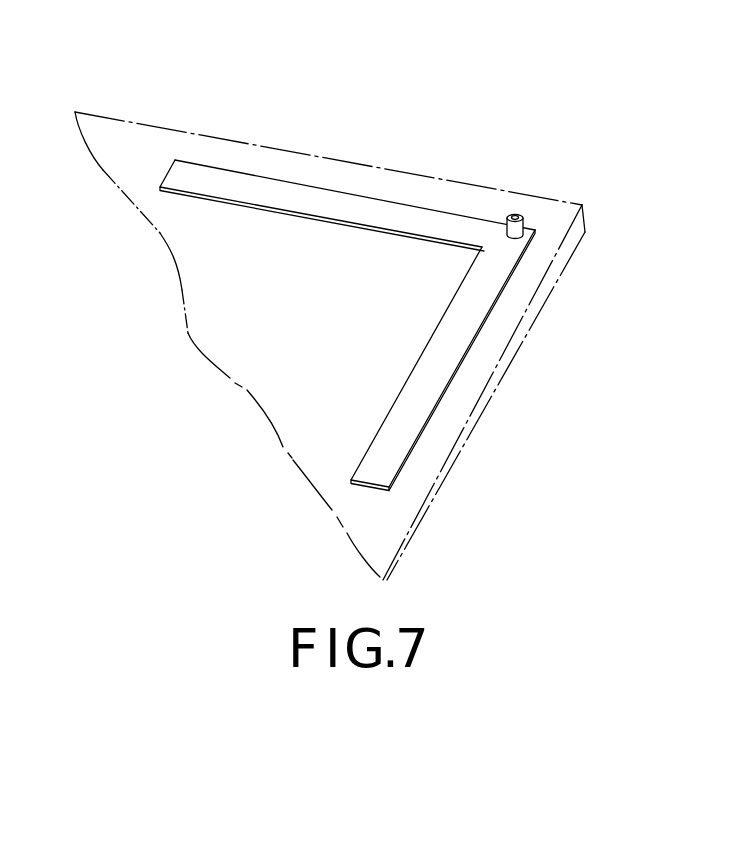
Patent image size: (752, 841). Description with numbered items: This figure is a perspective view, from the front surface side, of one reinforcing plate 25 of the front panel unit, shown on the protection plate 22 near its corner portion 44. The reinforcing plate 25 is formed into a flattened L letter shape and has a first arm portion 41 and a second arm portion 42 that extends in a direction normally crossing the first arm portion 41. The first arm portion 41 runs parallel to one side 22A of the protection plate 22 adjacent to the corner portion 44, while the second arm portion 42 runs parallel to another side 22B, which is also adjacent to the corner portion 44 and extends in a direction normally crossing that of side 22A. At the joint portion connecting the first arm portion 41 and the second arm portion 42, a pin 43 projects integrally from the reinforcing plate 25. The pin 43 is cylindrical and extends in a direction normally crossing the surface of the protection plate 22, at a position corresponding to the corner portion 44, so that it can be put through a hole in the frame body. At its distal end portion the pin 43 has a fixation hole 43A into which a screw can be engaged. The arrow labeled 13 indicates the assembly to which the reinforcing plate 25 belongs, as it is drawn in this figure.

The antenna device 13 is at (507, 80).
The protection plate 22 is at (222, 325).
The one side 22A is at (320, 155).
The another side 22B is at (497, 363).
The reinforcing plate 25 is at (441, 189).
The first arm portion 41 is at (318, 203).
The second arm portion 42 is at (430, 356).
The pin 43 is at (524, 228).
The fixation hole 43A is at (514, 214).
The corner portion 44 is at (587, 206).